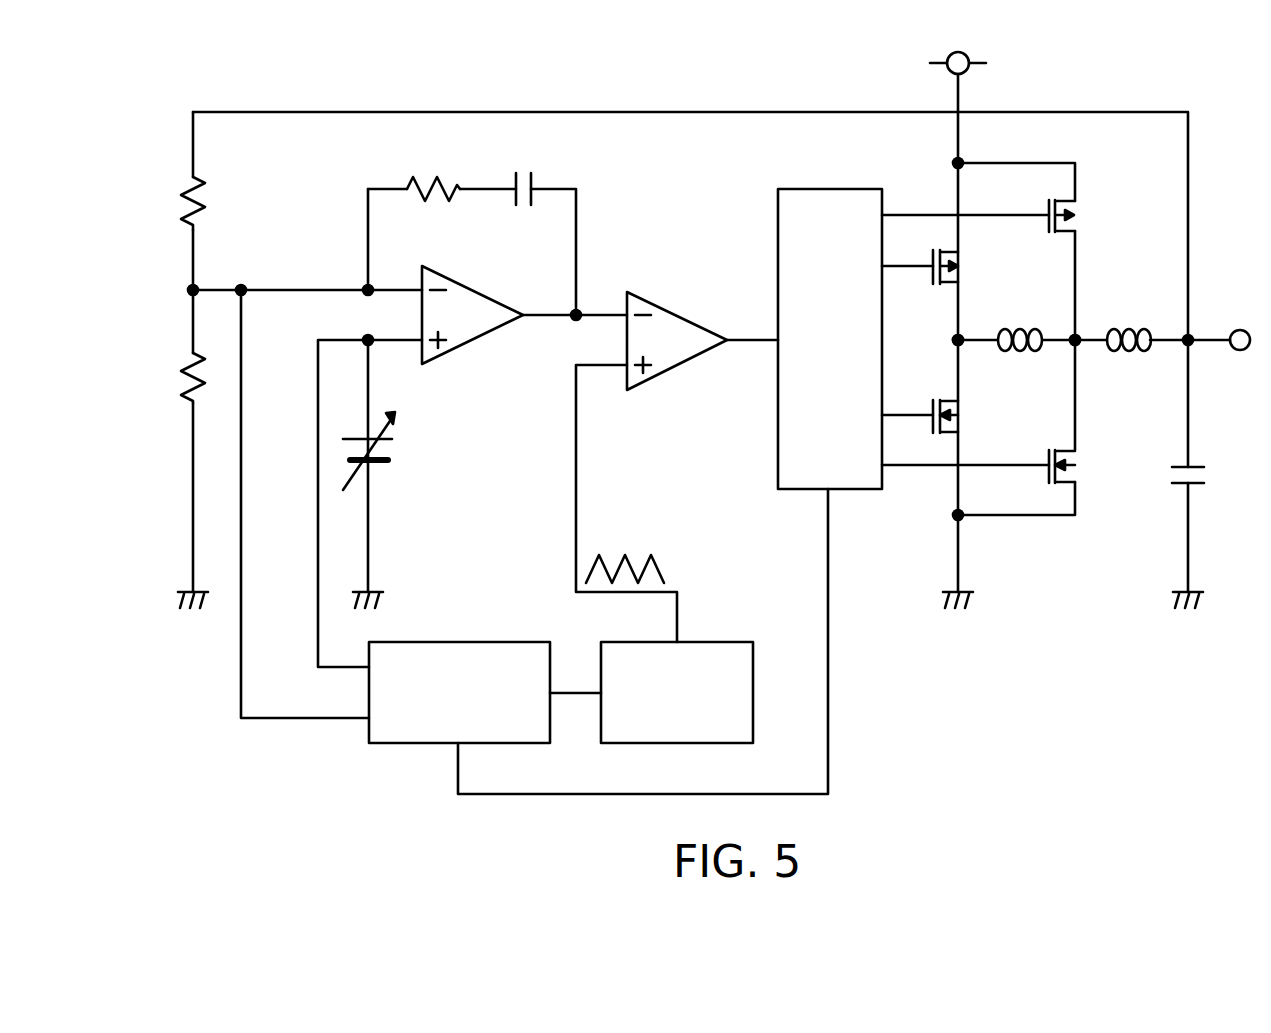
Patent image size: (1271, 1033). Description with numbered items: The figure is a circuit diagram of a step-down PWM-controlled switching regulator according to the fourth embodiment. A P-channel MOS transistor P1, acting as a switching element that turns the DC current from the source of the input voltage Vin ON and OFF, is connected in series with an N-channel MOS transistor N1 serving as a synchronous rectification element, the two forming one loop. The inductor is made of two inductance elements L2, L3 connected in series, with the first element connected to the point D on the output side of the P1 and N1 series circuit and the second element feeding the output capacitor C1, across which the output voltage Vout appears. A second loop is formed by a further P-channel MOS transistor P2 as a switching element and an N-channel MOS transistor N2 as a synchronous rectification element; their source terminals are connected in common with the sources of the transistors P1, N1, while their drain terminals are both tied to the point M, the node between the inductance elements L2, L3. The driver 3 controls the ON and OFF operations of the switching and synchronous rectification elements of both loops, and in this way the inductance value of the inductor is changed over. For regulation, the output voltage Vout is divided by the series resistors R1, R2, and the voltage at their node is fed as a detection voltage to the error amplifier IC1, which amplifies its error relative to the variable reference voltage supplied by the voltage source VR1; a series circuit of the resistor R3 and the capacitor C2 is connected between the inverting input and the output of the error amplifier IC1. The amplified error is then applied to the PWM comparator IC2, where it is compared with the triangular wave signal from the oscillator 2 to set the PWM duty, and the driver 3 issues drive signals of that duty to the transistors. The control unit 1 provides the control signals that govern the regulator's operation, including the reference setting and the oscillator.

The control unit 1 is at (447, 642).
The oscillator 2 is at (705, 642).
The driver 3 is at (828, 189).
The resistor R1 is at (183, 206).
The resistor R2 is at (183, 382).
The resistor R3 is at (438, 181).
The voltage source VR1 is at (394, 453).
The output capacitor C1 is at (1205, 478).
The capacitor C2 is at (526, 176).
The error amplifier IC1 is at (463, 286).
The PWM comparator IC2 is at (668, 312).
The P-channel MOS transistor P1 is at (963, 278).
The P-channel MOS transistor P2 is at (1079, 227).
The N-channel MOS transistor N1 is at (963, 421).
The N-channel MOS transistor N2 is at (1078, 475).
The inductance element L2 is at (1024, 323).
The inductance element L3 is at (1126, 323).
The point D is at (945, 341).
The point M is at (1083, 328).
The input voltage Vin is at (958, 51).
The output voltage Vout is at (1228, 327).